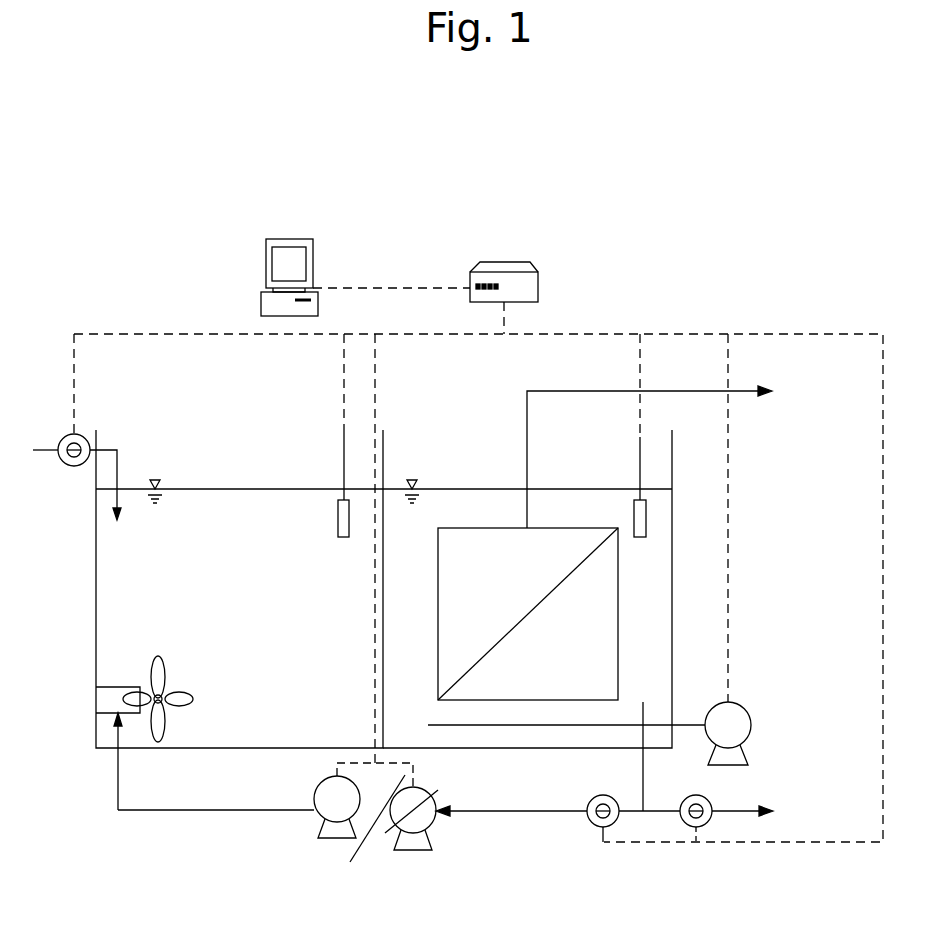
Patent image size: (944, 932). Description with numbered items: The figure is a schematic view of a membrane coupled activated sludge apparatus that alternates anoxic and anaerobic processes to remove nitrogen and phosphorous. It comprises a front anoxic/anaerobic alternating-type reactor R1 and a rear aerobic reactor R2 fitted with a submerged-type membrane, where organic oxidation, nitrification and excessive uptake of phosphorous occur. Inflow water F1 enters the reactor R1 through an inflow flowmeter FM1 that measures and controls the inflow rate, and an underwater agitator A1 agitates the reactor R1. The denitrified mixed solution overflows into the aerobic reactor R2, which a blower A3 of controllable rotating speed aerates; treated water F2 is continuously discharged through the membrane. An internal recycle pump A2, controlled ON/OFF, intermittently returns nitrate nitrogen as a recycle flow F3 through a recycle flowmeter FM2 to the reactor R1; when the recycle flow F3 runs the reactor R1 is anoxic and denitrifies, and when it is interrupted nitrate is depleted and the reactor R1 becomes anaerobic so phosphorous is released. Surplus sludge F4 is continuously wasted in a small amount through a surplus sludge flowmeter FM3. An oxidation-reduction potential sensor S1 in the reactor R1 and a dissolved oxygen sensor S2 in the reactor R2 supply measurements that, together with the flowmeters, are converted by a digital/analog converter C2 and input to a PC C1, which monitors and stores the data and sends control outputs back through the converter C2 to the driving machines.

The PC C1 is at (289, 264).
The digital/analog converter C2 is at (504, 268).
The inflow water F1 is at (40, 435).
The treated water F2 is at (665, 454).
The recycle flow F3 is at (511, 824).
The surplus sludge F4 is at (758, 811).
The inflow flowmeter FM1 is at (88, 477).
The recycle flowmeter FM2 is at (602, 833).
The surplus sludge flowmeter FM3 is at (696, 833).
The oxidation-reduction potential measuring sensor S1 is at (342, 500).
The dissolved oxygen measuring sensor S2 is at (640, 503).
The anoxic/anaerobic alternating-type reactor R1 is at (384, 589).
The aerobic reactor R2 is at (527, 589).
The underwater agitator A1 is at (124, 733).
The internal recycle pump A2 is at (278, 830).
The blower A3 is at (608, 733).